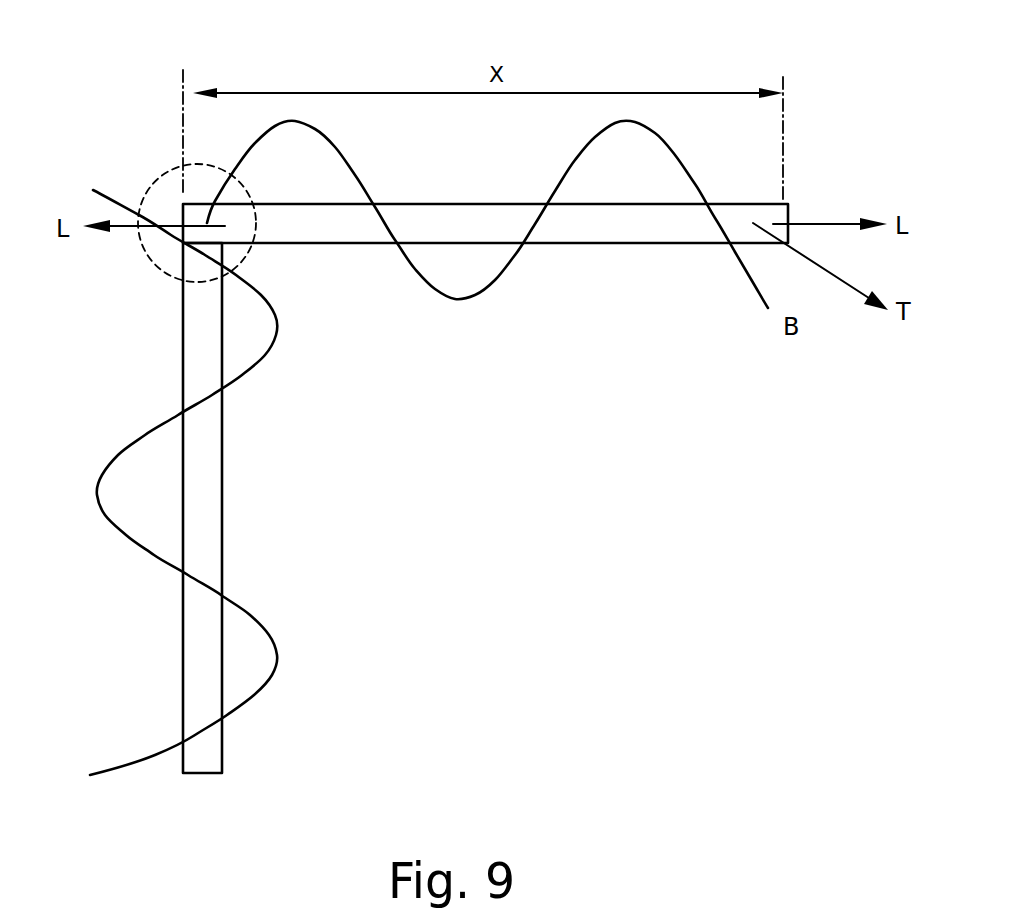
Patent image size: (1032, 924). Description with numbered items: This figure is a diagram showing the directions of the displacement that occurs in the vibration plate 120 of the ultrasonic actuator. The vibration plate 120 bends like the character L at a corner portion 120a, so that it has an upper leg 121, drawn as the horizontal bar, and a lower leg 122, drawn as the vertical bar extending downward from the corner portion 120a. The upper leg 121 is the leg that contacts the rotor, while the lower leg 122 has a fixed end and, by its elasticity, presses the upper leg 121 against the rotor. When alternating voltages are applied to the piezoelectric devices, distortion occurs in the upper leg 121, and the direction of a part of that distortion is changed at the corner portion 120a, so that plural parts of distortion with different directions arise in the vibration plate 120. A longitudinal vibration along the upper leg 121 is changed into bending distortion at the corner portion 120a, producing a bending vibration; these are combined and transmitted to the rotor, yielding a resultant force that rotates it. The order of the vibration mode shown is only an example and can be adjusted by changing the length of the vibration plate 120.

The vibration plate 120 is at (485, 488).
The corner portion 120a is at (155, 177).
The upper leg 121 is at (292, 223).
The lower leg 122 is at (207, 432).